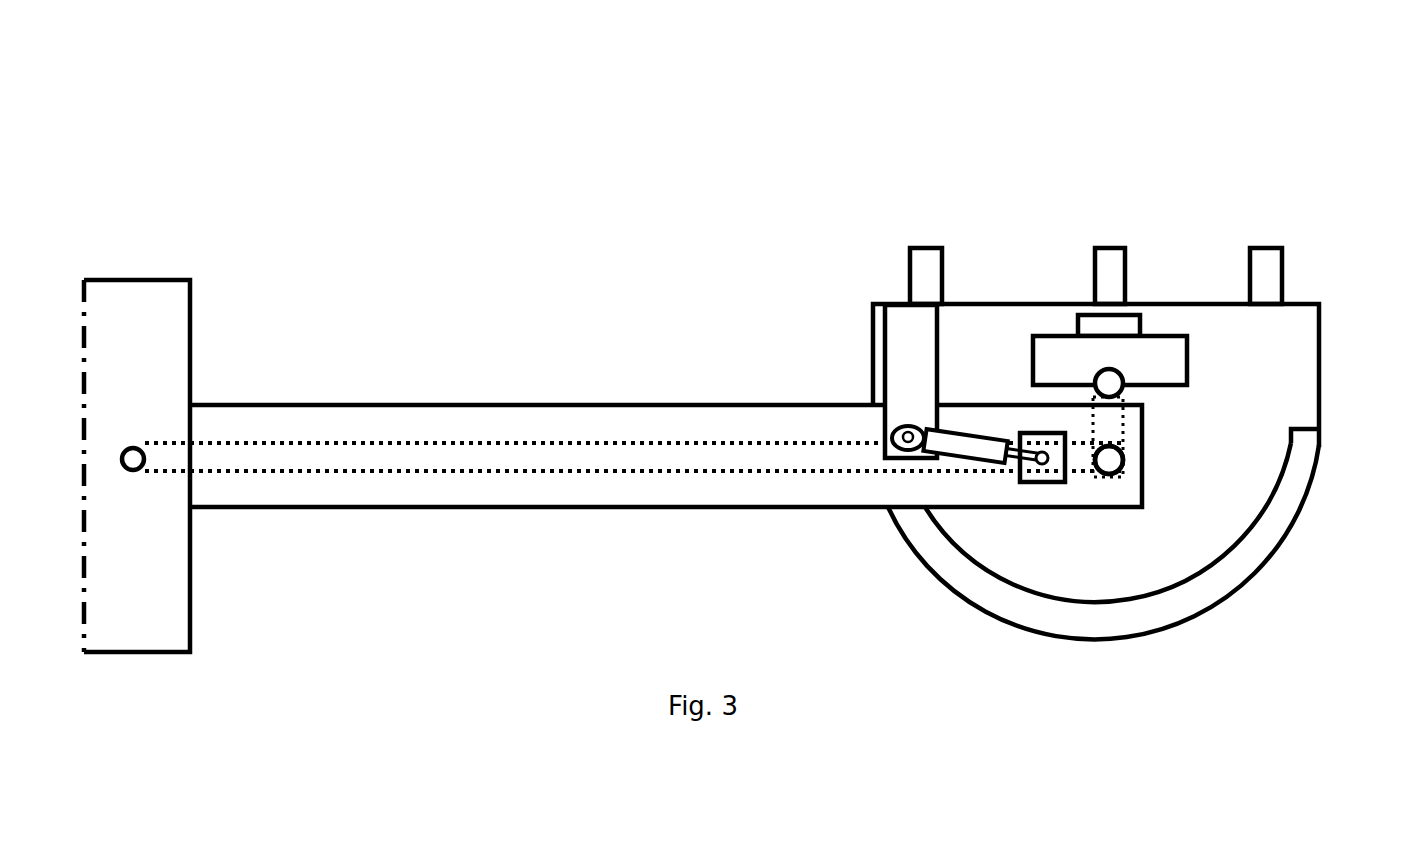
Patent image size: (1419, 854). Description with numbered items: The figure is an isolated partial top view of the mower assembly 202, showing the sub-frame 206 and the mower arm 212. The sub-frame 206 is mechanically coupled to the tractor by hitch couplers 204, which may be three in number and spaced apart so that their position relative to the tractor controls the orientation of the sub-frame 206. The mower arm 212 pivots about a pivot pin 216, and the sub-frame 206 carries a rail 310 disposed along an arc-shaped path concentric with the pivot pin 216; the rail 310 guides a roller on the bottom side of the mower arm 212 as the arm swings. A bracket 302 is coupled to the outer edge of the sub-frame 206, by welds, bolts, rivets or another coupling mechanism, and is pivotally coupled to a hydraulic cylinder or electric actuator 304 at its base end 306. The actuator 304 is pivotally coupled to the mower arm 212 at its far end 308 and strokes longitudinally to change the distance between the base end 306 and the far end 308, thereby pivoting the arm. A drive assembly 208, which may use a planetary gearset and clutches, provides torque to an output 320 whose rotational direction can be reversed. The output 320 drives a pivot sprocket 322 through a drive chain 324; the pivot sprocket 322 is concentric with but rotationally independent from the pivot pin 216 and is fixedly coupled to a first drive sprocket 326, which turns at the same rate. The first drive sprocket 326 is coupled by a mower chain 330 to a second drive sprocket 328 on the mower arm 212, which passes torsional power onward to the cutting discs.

The mower assembly 202 is at (751, 397).
The hitch couplers 204 is at (1265, 268).
The sub-frame 206 is at (1257, 374).
The drive assembly 208 is at (1128, 366).
The mower arm 212 is at (391, 495).
The pivot pin 216 is at (1127, 462).
The bracket 302 is at (859, 306).
The hydraulic cylinder or electric actuator 304 is at (960, 443).
The base end 306 is at (885, 425).
The far end 308 is at (1042, 462).
The rail 310 is at (1202, 603).
The output 320 is at (1123, 388).
The pivot sprocket 322 is at (1068, 591).
The drive chain 324 is at (1130, 432).
The first drive sprocket 326 is at (1113, 480).
The second drive sprocket 328 is at (131, 437).
The mower chain 330 is at (510, 447).